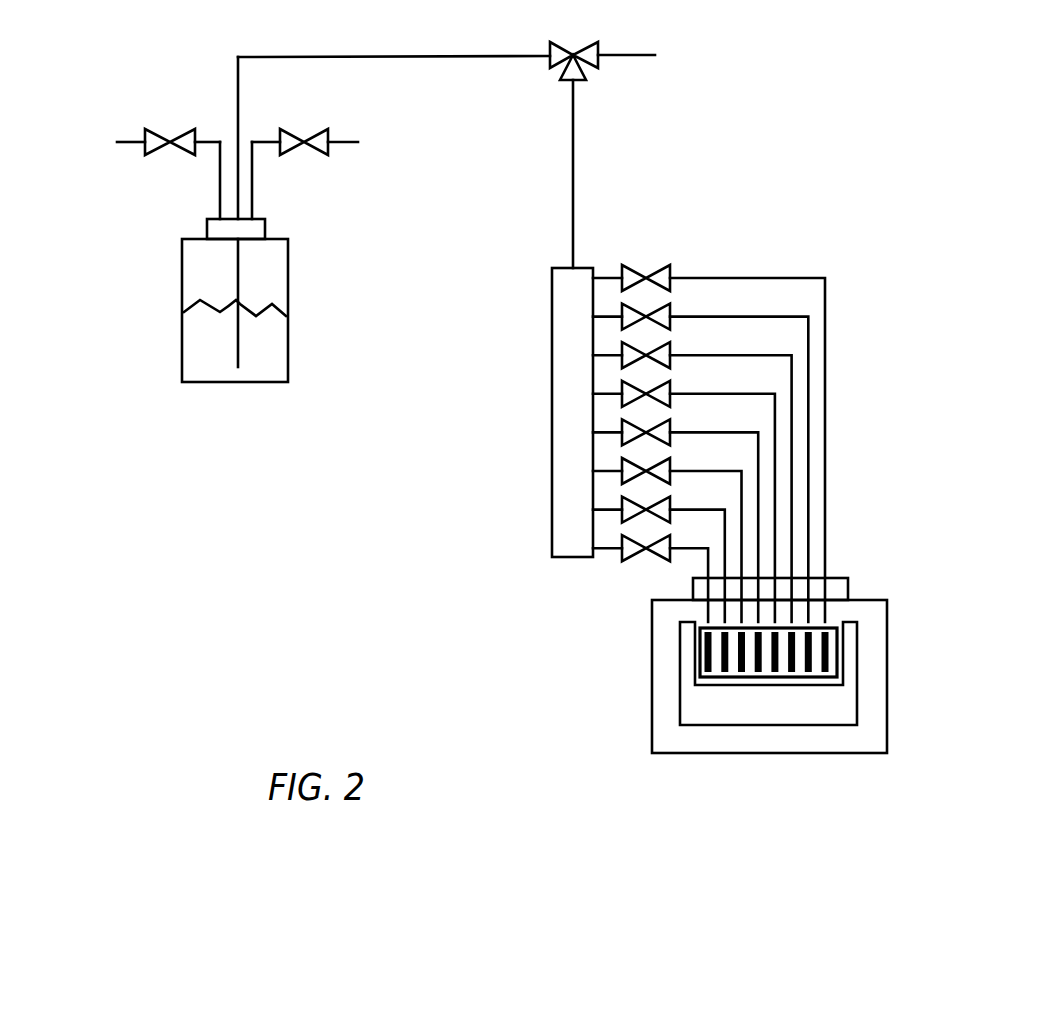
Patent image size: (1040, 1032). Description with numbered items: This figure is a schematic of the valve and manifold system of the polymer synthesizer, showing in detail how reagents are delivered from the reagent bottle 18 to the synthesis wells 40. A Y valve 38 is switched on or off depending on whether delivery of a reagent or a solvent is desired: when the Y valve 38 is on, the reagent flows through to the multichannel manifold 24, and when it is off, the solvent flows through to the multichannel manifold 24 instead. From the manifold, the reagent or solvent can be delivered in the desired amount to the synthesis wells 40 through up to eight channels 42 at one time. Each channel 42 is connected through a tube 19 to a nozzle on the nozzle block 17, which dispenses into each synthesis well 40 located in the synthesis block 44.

The nozzle block 17 is at (840, 578).
The reagent bottle 18 is at (182, 355).
The tube 19 is at (791, 412).
The multichannel manifold 24 is at (565, 495).
The Y valve 38 is at (578, 47).
The synthesis well 40 is at (740, 660).
The channel 42 is at (598, 315).
The synthesis block 44 is at (888, 643).